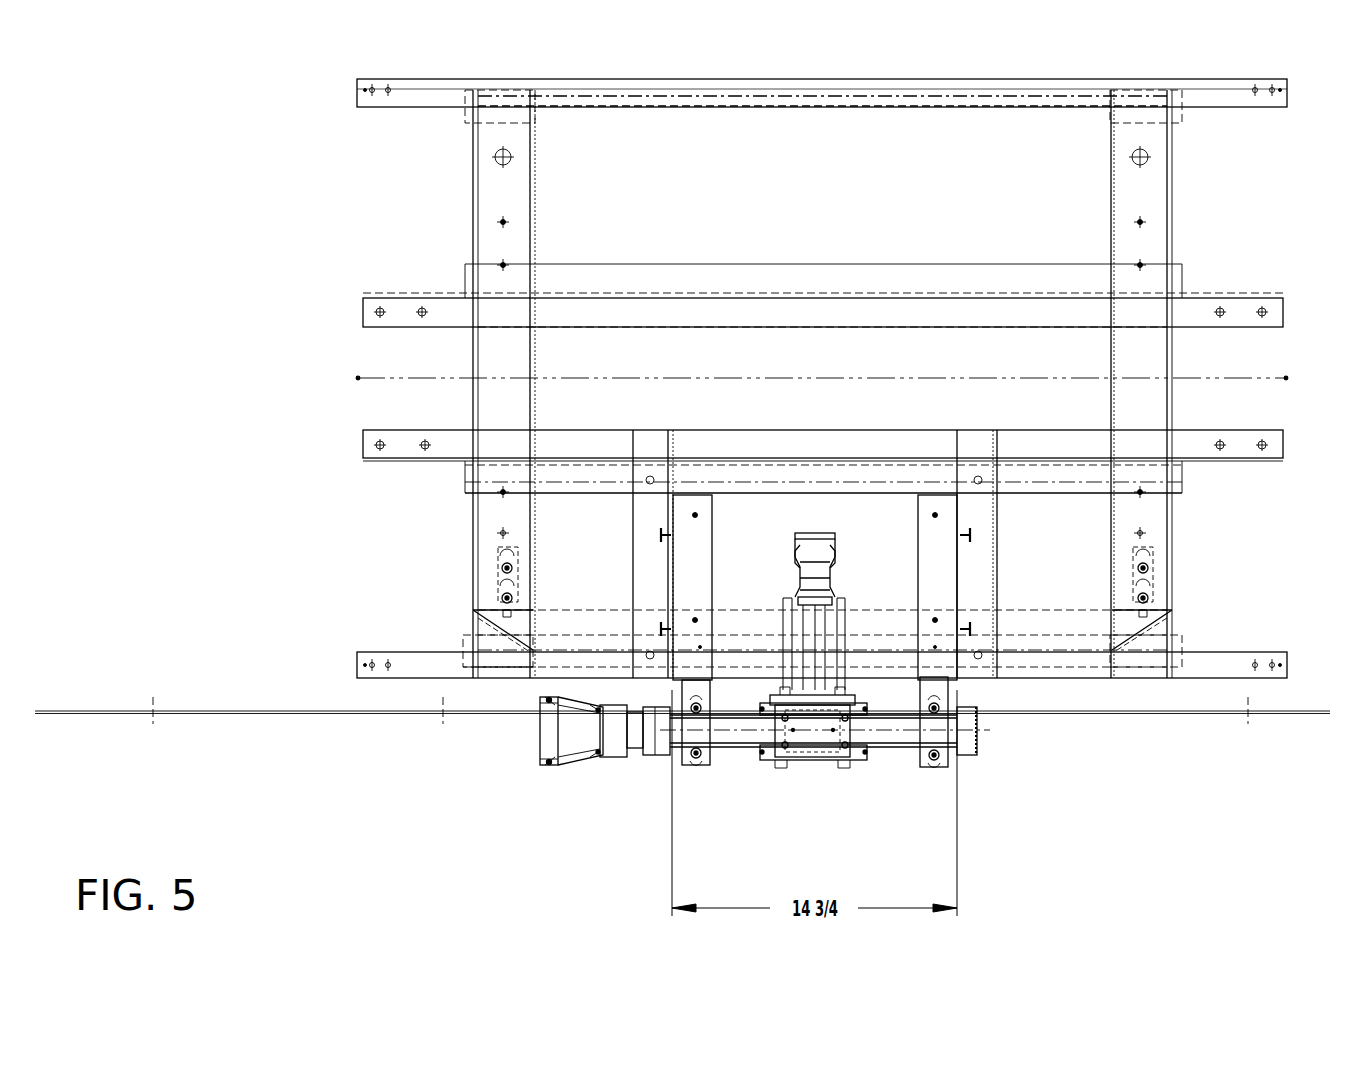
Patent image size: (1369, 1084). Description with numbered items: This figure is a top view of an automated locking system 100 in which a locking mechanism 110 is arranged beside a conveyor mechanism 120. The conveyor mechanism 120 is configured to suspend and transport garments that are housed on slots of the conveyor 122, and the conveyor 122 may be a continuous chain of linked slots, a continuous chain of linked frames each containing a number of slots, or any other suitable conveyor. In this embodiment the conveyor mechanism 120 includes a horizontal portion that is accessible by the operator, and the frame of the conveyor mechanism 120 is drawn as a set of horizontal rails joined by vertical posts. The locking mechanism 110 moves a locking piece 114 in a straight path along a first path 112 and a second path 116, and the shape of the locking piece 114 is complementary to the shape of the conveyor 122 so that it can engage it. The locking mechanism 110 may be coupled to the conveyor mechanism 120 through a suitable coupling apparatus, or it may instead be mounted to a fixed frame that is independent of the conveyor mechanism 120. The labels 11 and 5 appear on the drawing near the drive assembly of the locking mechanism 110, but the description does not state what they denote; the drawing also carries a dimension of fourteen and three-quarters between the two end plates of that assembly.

The automated locking system 100 is at (312, 222).
The locking mechanism 110 is at (552, 767).
The first path 112 is at (967, 757).
The locking piece 114 is at (708, 757).
The second path 116 is at (810, 760).
The conveyor mechanism 120 is at (470, 555).
The conveyor 122 is at (535, 673).
The upper bracket 11 is at (828, 703).
The drive shaft 5 is at (825, 728).